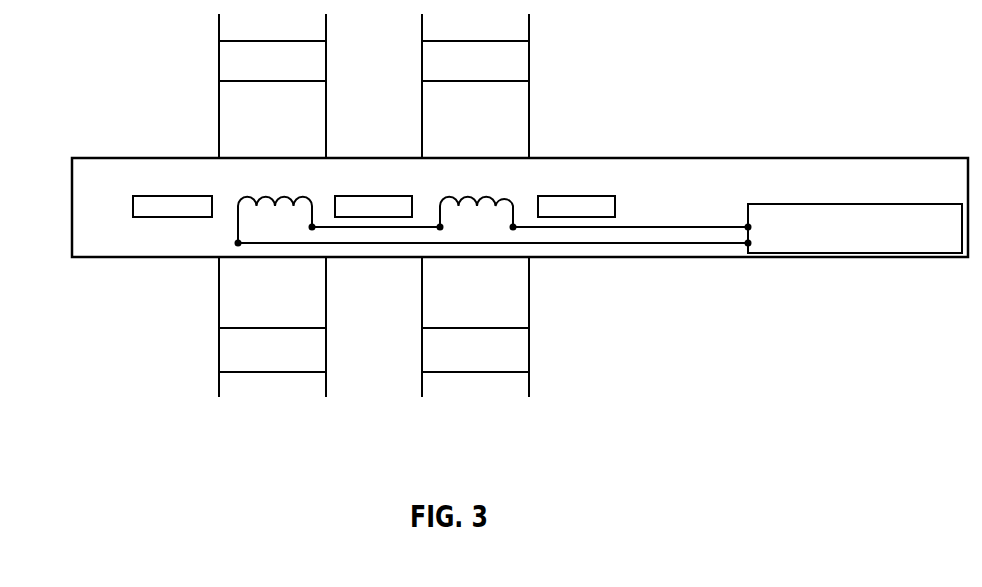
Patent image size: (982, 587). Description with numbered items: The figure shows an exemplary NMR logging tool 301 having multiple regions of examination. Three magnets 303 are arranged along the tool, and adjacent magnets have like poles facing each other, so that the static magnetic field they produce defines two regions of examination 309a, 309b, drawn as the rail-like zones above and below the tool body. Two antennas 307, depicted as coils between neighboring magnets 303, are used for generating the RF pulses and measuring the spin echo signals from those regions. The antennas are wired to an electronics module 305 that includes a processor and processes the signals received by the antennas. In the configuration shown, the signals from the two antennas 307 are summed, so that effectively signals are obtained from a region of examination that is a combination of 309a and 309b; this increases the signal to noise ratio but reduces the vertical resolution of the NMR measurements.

The logging tool 301 is at (92, 158).
The magnet 303 is at (163, 194).
The electronics module 305 is at (765, 203).
The antenna 307 is at (266, 194).
The region of examination 309a is at (250, 373).
The region of examination 309b is at (462, 373).